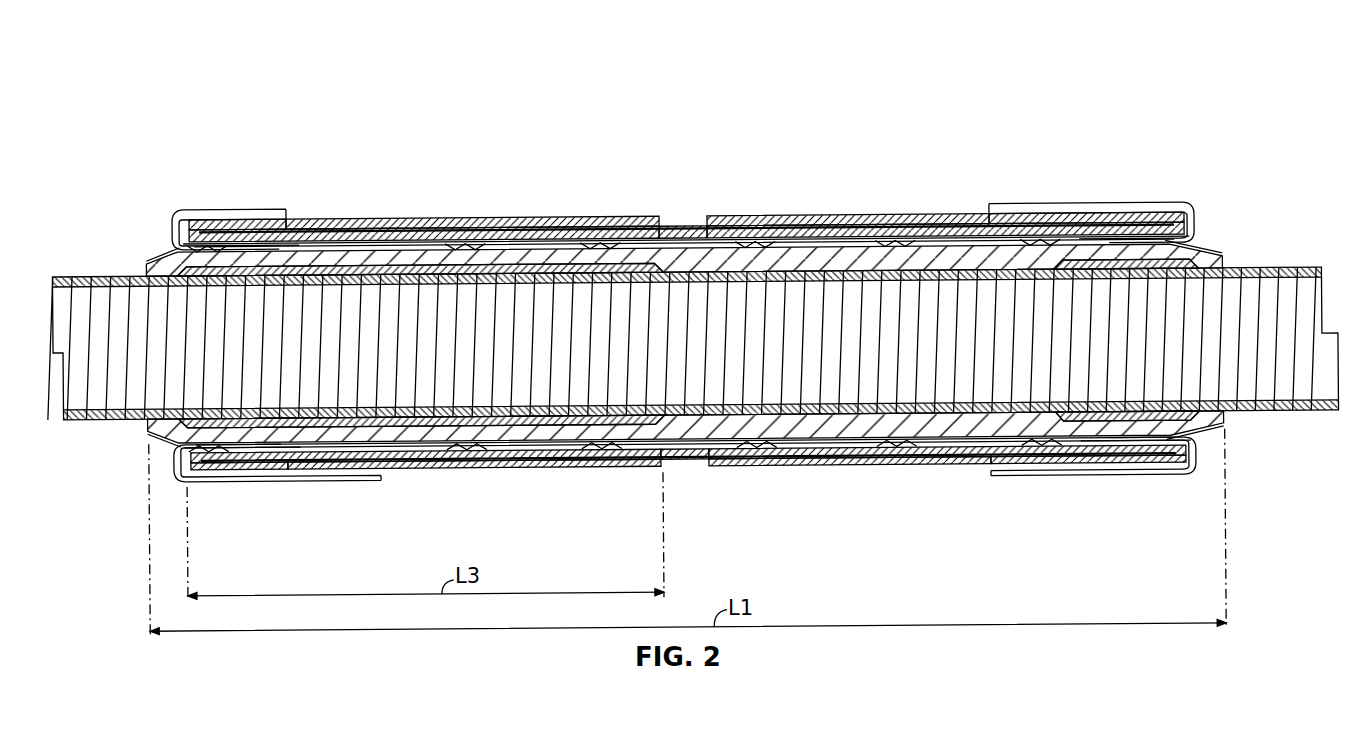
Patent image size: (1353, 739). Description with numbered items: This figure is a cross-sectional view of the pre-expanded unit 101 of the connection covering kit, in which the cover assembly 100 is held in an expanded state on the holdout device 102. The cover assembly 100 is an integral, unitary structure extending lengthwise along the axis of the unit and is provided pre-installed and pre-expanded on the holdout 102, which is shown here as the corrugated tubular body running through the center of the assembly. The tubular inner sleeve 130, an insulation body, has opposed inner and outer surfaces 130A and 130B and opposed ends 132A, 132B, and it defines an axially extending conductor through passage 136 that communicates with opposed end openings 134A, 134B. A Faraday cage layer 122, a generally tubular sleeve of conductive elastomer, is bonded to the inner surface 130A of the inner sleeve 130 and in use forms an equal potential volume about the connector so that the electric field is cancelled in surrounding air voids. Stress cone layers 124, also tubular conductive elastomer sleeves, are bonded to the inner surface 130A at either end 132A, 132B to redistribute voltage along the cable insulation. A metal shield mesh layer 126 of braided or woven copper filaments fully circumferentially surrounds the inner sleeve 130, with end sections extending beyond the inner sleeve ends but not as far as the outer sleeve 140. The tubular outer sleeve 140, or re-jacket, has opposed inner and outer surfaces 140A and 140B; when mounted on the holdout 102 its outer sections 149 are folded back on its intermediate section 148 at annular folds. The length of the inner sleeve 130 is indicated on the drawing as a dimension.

The cover assembly 100 is at (157, 100).
The pre-expanded unit 101 is at (974, 130).
The holdout device 102 is at (132, 400).
The Faraday cage layer 122 is at (492, 416).
The stress cone layers 124 is at (210, 435).
The metal shield mesh layer 126 is at (1152, 207).
The inner sleeve 130 is at (443, 230).
The inner surface 130A is at (367, 230).
The outer surface 130B is at (318, 232).
The end 132A is at (148, 262).
The end 132B is at (1228, 258).
The end opening 134A is at (159, 380).
The end opening 134B is at (1252, 358).
The conductor through passage 136 is at (380, 416).
The outer sleeve 140 is at (612, 217).
The inner surface 140A is at (1053, 238).
The outer surface 140B is at (693, 232).
The intermediate section 148 is at (672, 230).
The outer sections 149 is at (517, 229).